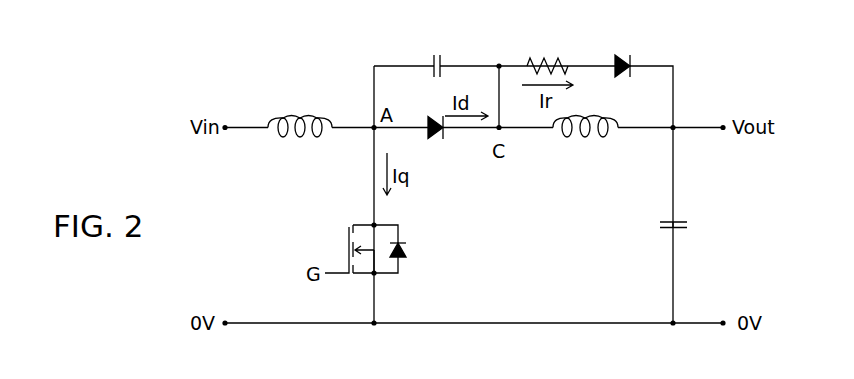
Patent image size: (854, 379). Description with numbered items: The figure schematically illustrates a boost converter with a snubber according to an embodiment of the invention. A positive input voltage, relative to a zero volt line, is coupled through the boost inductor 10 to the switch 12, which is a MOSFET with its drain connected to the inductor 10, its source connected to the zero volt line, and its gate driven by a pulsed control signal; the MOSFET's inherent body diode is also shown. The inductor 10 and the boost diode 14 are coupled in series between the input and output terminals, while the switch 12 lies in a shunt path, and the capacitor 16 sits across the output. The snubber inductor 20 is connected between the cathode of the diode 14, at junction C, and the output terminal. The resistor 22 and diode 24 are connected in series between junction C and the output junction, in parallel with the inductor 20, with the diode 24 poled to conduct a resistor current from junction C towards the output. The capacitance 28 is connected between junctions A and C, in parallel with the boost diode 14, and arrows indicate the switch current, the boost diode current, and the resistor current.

The inductor 10 is at (300, 138).
The capacitance 28 is at (435, 49).
The diode 14 is at (437, 140).
The resistor 22 is at (548, 55).
The diode 24 is at (622, 52).
The inductor 20 is at (586, 138).
The switch 12 is at (337, 244).
The capacitor 16 is at (658, 224).